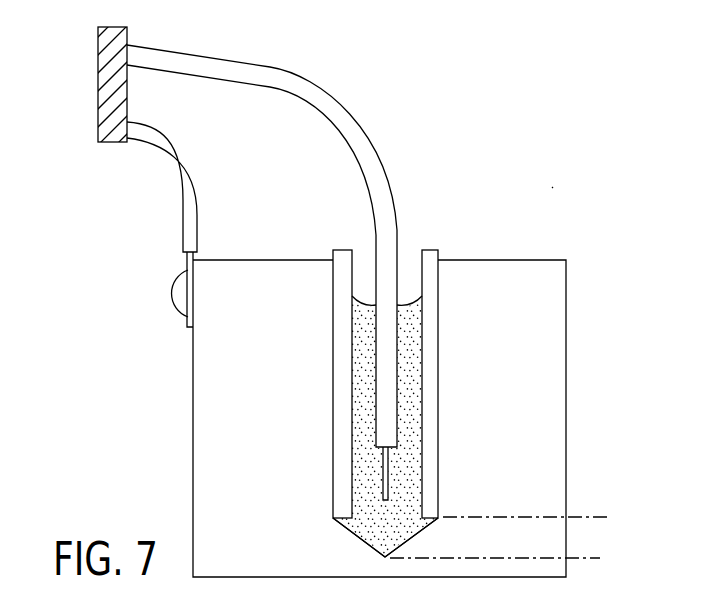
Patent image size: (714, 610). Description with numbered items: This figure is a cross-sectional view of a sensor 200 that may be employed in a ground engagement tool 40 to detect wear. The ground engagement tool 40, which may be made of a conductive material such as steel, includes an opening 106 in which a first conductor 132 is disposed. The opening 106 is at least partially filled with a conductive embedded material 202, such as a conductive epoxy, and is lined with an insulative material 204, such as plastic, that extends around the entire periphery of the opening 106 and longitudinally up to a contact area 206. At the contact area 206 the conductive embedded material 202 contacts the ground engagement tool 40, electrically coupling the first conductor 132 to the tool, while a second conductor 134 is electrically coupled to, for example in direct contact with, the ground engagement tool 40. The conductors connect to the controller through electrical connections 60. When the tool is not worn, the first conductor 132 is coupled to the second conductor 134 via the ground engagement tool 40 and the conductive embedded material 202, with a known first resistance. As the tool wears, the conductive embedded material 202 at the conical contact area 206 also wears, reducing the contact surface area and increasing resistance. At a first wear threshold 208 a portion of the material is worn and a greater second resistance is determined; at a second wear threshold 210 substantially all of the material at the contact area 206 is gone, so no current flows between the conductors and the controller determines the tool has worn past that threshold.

The ground engagement tool 40 is at (530, 430).
The electrical connection 60 is at (107, 88).
The opening 106 is at (408, 250).
The first conductor 132 is at (383, 497).
The second conductor 134 is at (187, 264).
The sensor 200 is at (552, 188).
The conductive embedded material 202 is at (405, 343).
The insulative material 204 is at (430, 388).
The contact area 206 is at (365, 523).
The first wear threshold 208 is at (588, 558).
The second wear threshold 210 is at (592, 517).